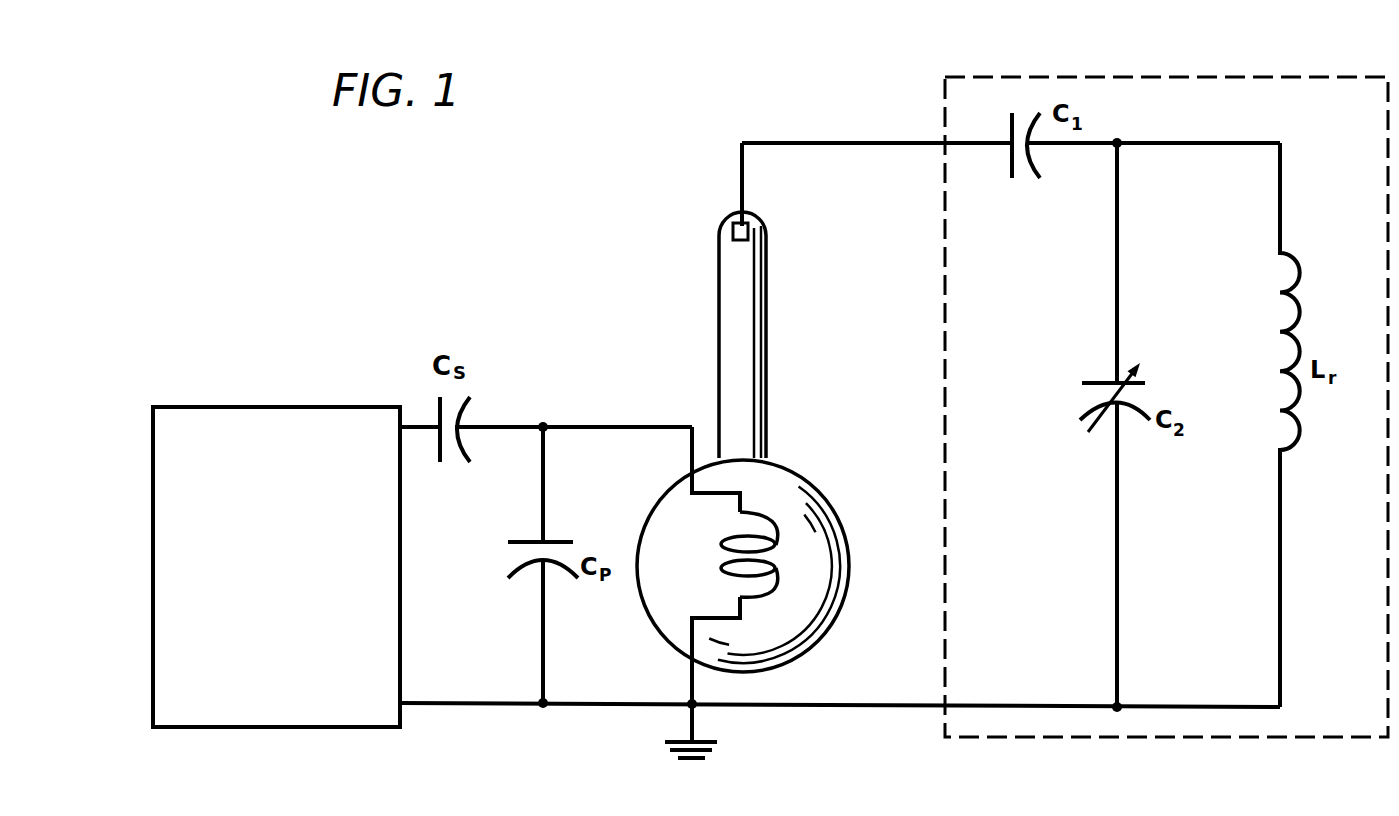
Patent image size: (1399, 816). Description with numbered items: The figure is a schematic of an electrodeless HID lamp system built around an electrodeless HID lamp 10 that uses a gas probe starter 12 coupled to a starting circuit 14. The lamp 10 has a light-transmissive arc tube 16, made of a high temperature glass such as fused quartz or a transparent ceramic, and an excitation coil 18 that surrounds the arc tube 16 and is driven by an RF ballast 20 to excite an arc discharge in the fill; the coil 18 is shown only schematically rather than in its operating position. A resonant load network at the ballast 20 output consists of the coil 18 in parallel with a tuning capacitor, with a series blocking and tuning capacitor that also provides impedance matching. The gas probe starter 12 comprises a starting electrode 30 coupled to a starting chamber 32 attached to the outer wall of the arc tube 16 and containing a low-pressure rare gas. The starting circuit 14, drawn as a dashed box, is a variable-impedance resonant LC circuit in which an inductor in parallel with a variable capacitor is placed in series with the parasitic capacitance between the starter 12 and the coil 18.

The electrodeless HID lamp 10 is at (743, 448).
The gas probe starter 12 is at (756, 448).
The starting circuit 14 is at (1126, 77).
The arc tube 16 is at (815, 485).
The excitation coil 18 is at (728, 571).
The RF ballast 20 is at (259, 612).
The starting electrode 30 is at (765, 228).
The starting chamber 32 is at (770, 333).